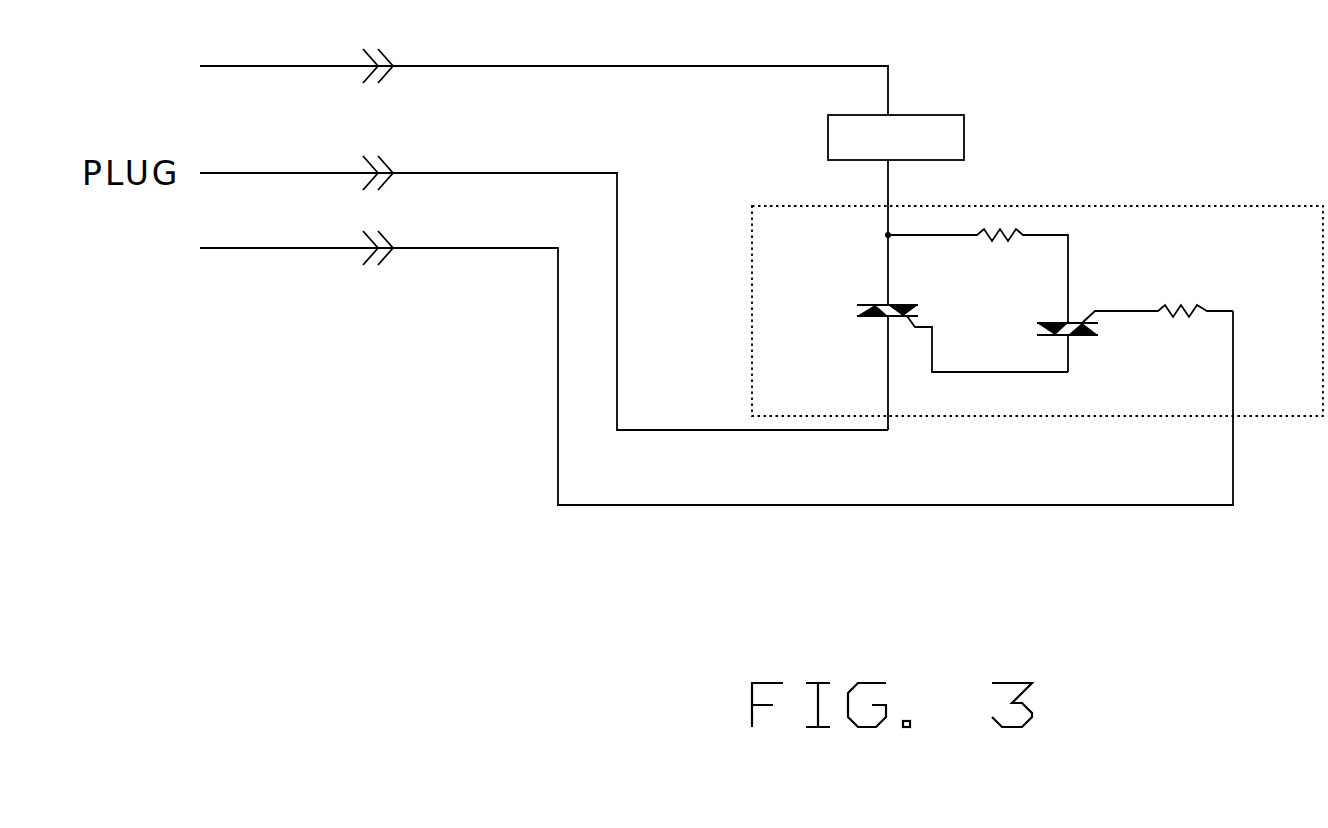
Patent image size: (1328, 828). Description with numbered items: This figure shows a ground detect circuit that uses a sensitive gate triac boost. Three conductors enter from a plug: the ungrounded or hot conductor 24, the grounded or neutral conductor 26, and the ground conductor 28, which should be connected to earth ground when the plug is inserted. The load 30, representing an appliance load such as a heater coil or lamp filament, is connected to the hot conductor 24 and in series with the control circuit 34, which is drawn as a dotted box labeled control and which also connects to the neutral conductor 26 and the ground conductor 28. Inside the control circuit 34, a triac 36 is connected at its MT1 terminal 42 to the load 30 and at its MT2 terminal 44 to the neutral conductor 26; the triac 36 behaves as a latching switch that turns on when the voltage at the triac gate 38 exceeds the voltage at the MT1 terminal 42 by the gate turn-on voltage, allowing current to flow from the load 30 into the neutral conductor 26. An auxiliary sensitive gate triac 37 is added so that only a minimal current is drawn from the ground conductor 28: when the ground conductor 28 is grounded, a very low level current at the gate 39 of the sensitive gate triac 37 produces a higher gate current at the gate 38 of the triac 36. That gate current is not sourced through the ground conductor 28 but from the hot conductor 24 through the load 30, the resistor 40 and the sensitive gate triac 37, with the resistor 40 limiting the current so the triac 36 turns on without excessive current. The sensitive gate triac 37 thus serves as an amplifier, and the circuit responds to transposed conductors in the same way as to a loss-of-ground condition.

The ungrounded conductor 24 is at (515, 52).
The grounded conductor 26 is at (483, 158).
The ground conductor 28 is at (467, 233).
The load 30 is at (978, 132).
The control circuit 34 is at (1158, 192).
The triac 36 is at (842, 310).
The sensitive gate triac 37 is at (1080, 342).
The triac gate 38 is at (932, 312).
The gate of the sensitive gate triac 39 is at (1113, 297).
The resistor 40 is at (993, 252).
The MT1 terminal 42 is at (872, 355).
The MT2 terminal 44 is at (872, 267).